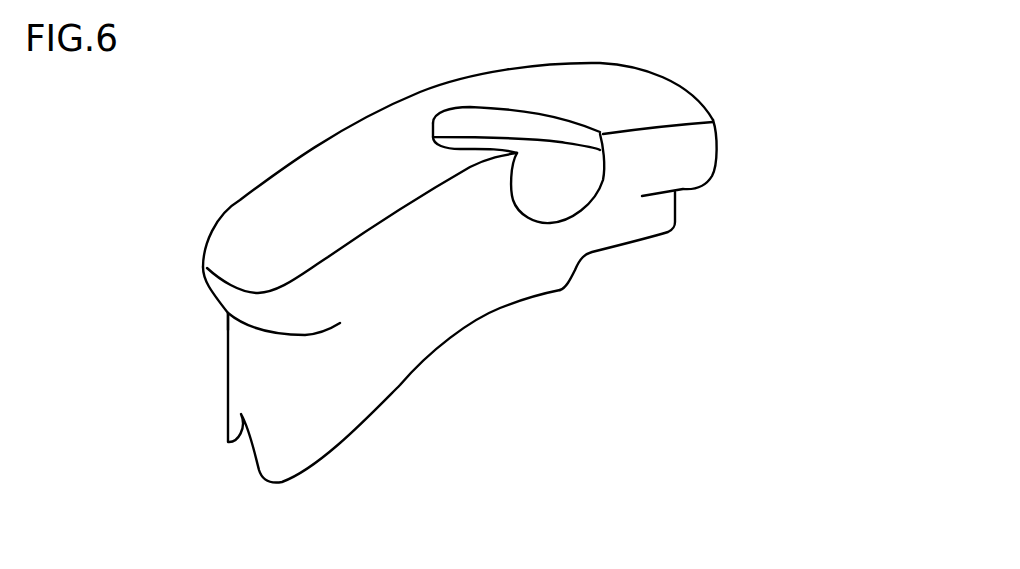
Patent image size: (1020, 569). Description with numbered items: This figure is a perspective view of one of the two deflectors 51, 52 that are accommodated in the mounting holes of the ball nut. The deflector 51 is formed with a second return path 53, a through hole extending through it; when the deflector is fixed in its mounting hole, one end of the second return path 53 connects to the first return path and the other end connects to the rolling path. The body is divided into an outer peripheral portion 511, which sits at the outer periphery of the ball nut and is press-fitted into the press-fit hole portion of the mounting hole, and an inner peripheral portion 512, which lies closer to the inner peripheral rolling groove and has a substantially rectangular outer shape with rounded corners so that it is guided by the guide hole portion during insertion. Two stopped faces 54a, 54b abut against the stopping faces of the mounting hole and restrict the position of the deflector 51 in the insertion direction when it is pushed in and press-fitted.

The deflector 51 is at (672, 57).
The deflector 52 is at (627, 76).
The outer peripheral portion 511 is at (693, 152).
The inner peripheral portion 512 is at (270, 373).
The second return path 53 is at (545, 163).
The stopped face 54a is at (258, 328).
The stopped face 54b is at (683, 192).